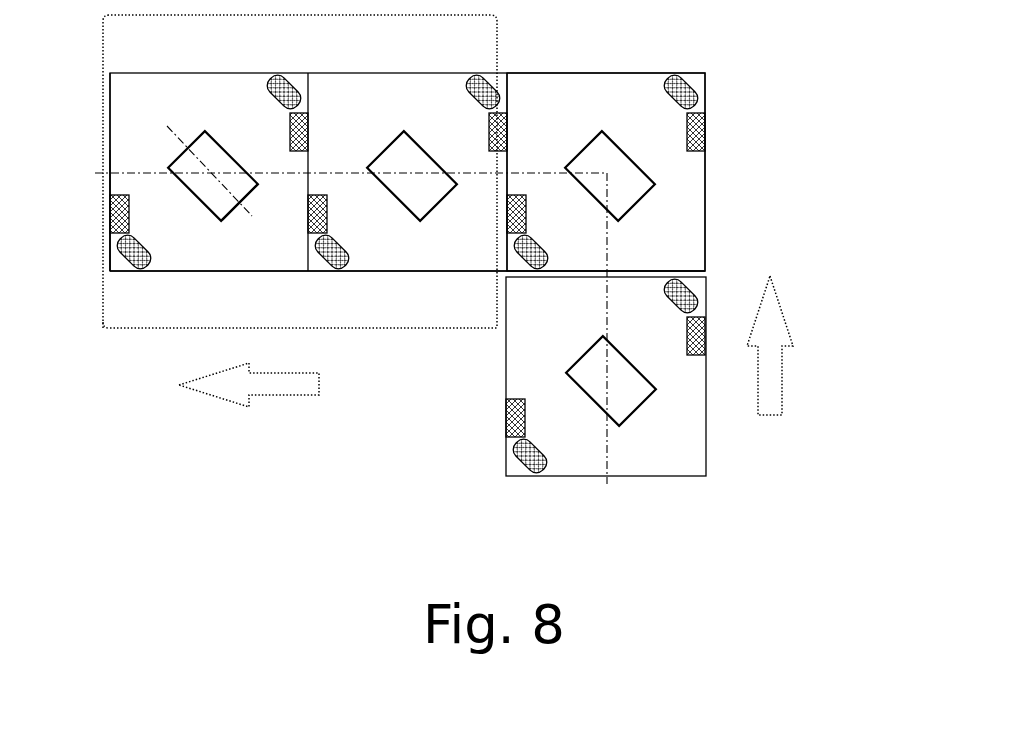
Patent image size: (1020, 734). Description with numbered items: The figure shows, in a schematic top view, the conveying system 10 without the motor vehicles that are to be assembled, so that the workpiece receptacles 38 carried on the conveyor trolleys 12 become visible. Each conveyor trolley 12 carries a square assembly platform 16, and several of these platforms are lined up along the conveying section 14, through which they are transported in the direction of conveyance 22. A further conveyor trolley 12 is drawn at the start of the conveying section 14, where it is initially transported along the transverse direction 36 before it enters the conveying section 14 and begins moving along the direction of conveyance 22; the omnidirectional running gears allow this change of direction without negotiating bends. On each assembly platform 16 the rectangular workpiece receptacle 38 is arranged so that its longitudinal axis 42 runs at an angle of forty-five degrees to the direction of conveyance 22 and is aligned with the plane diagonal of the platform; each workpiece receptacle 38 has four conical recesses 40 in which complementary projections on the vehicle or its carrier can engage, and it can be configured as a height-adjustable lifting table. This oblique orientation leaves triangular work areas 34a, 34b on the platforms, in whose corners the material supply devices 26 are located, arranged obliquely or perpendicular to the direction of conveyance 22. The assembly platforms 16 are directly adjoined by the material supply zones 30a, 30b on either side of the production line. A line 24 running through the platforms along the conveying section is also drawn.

The conveying system 10 is at (144, 440).
The conveyor trolley 12 is at (104, 92).
The conveying section 14 is at (388, 358).
The assembly platform 16 is at (110, 186).
The direction of conveyance 22 is at (277, 395).
The center axis line 24 is at (128, 173).
The material supply device 26 is at (293, 76).
The material supply zone 30a is at (497, 38).
The material supply zone 30b is at (125, 322).
The triangular work area 34a is at (641, 115).
The triangular work area 34b is at (582, 230).
The transverse direction 36 is at (770, 381).
The workpiece receptacle 38 is at (222, 142).
The conical recess 40 is at (232, 213).
The longitudinal axis 42 is at (196, 160).